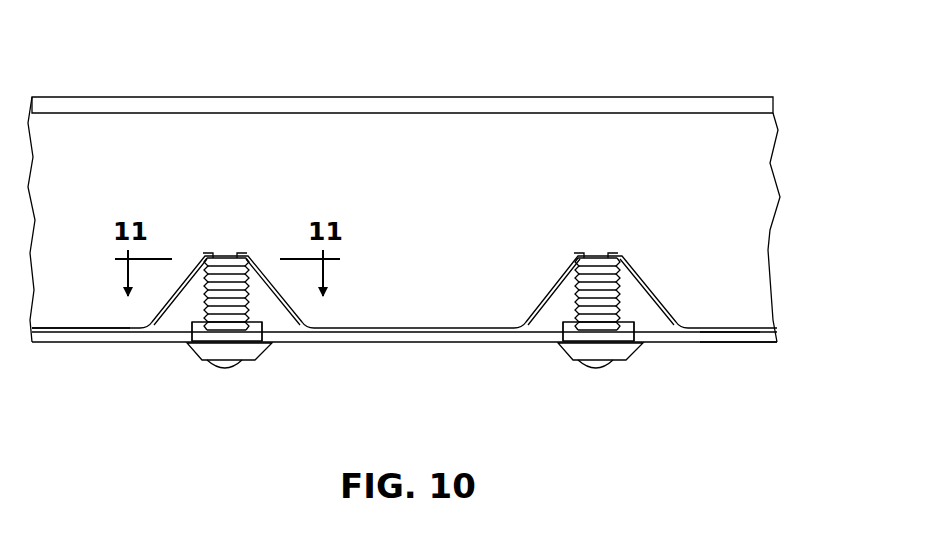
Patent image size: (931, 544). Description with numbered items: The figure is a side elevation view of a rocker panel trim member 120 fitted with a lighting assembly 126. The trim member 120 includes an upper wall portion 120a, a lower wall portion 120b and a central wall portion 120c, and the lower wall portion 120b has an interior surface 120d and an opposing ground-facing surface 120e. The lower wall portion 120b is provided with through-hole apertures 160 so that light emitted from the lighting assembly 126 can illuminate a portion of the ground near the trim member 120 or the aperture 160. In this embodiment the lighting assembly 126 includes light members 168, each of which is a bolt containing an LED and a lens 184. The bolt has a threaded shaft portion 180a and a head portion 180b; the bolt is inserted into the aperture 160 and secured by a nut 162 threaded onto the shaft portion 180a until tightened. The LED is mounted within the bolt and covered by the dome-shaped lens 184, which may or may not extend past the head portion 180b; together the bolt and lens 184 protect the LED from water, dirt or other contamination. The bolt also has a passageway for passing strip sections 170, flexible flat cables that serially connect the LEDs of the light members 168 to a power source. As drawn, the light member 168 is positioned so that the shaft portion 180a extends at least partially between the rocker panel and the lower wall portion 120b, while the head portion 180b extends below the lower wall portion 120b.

The rocker panel trim member 120 is at (430, 225).
The upper wall portion 120a is at (213, 105).
The lower wall portion 120b is at (408, 335).
The central wall portion 120c is at (441, 240).
The interior surface 120d is at (715, 330).
The ground-facing surface 120e is at (740, 343).
The lighting assembly 126 is at (100, 302).
The through-hole aperture 160 is at (180, 324).
The nut 162 is at (264, 325).
The light member 168 is at (270, 358).
The strip section 170 is at (40, 326).
The threaded shaft portion 180a is at (228, 272).
The head portion 180b is at (202, 350).
The lens 184 is at (224, 367).